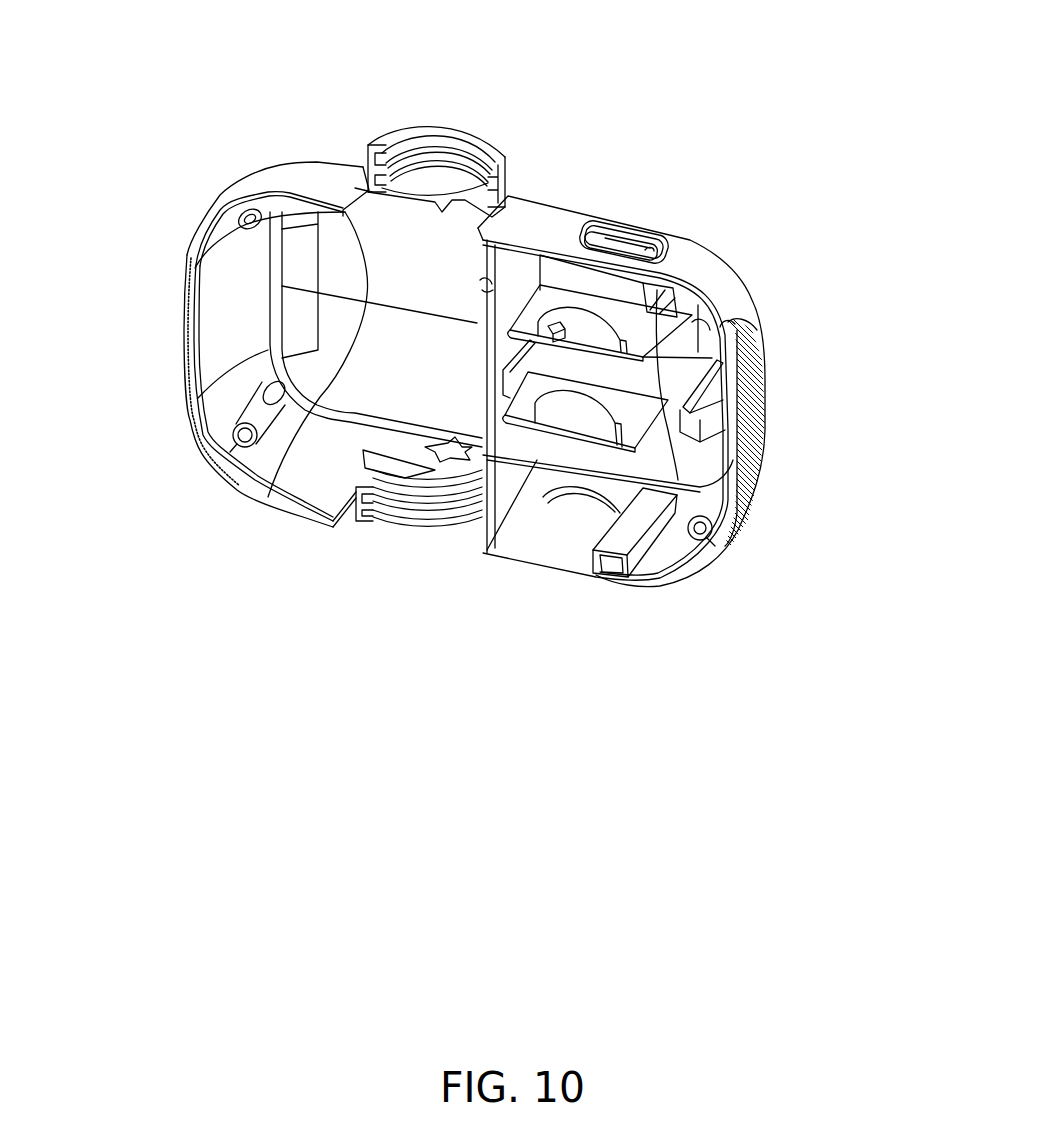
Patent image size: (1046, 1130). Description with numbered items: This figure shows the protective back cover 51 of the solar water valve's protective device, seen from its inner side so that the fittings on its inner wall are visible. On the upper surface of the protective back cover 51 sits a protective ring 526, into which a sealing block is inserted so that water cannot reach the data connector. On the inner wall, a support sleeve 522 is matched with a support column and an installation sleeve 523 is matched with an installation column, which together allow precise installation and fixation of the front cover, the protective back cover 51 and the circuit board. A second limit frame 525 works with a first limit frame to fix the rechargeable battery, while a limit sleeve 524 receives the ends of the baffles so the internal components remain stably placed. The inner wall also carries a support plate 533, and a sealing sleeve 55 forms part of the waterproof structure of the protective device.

The protective back cover 51 is at (588, 357).
The protective ring 526 is at (624, 233).
The second limit frame 525 is at (638, 410).
The support plate 533 is at (700, 419).
The installation sleeve 523 is at (710, 510).
The limit sleeve 524 is at (620, 537).
The sealing sleeve 55 is at (368, 520).
The support sleeve 522 is at (253, 405).